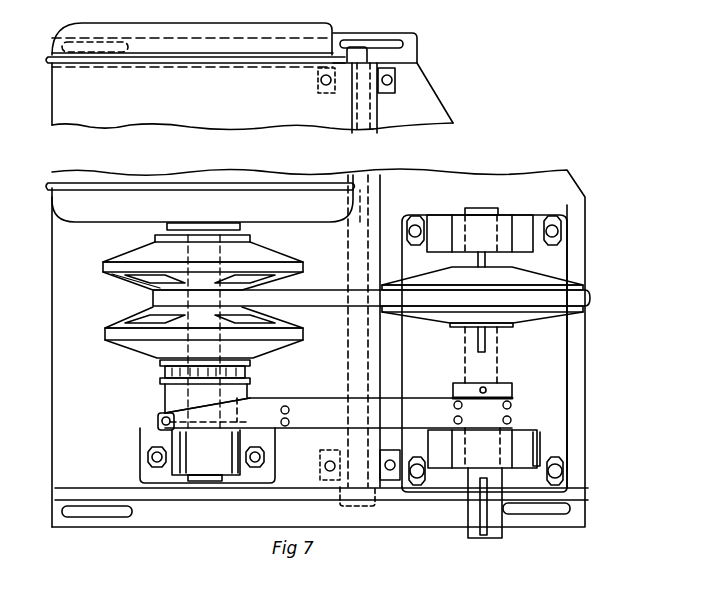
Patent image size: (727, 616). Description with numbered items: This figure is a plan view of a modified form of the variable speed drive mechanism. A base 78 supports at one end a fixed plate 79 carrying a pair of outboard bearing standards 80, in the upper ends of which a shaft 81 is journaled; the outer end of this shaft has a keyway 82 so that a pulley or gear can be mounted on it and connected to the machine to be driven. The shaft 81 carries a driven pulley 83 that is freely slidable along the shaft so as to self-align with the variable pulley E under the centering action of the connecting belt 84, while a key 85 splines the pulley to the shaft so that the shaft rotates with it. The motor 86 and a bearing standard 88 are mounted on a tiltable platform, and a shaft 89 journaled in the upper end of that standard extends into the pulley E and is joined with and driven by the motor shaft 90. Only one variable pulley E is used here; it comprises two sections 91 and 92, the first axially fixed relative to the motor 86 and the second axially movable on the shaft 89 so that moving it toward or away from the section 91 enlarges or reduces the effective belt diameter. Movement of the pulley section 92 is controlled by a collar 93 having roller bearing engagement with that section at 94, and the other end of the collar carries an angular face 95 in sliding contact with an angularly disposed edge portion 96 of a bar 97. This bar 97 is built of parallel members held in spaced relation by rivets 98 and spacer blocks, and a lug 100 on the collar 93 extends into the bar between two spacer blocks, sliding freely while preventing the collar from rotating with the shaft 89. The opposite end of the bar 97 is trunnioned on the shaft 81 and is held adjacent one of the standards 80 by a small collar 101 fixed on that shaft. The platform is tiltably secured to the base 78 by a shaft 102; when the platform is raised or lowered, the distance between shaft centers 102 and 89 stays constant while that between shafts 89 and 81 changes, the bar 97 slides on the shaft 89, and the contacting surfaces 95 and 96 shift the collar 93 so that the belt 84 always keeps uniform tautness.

The base 78 is at (571, 196).
The fixed plate 79 is at (560, 452).
The outboard bearing standards 80 is at (518, 232).
The shaft 81 is at (472, 510).
The keyway 82 is at (484, 522).
The driven pulley 83 is at (532, 315).
The connecting belt 84 is at (333, 297).
The key 85 is at (480, 342).
The motor 86 is at (200, 195).
The bearing standard 88 is at (208, 470).
The shaft 89 is at (218, 470).
The motor shaft 90 is at (198, 233).
The pulley section 91 is at (298, 267).
The pulley section 92 is at (300, 338).
The collar 93 is at (238, 393).
The roller bearing engagement 94 is at (165, 375).
The angular face 95 is at (190, 410).
The angularly disposed edge portion 96 is at (163, 416).
The bar 97 is at (318, 397).
The rivets 98 is at (290, 410).
The lug 100 is at (236, 410).
The small collar 101 is at (505, 394).
The shaft 102 is at (358, 226).
The variable pulley E is at (127, 283).